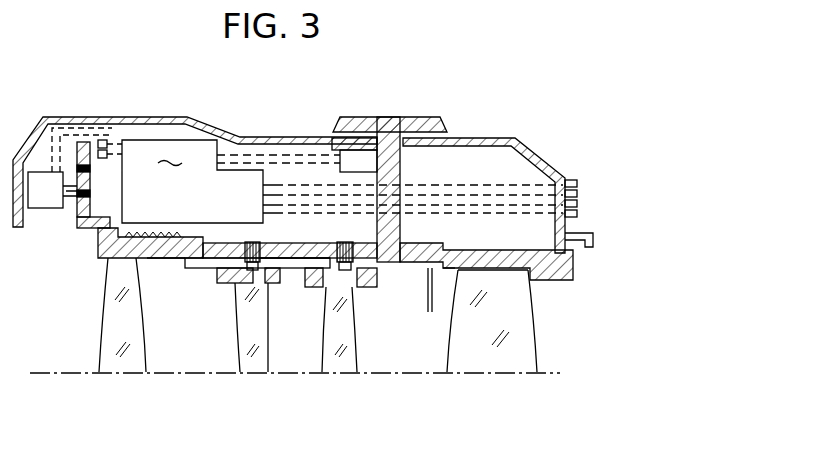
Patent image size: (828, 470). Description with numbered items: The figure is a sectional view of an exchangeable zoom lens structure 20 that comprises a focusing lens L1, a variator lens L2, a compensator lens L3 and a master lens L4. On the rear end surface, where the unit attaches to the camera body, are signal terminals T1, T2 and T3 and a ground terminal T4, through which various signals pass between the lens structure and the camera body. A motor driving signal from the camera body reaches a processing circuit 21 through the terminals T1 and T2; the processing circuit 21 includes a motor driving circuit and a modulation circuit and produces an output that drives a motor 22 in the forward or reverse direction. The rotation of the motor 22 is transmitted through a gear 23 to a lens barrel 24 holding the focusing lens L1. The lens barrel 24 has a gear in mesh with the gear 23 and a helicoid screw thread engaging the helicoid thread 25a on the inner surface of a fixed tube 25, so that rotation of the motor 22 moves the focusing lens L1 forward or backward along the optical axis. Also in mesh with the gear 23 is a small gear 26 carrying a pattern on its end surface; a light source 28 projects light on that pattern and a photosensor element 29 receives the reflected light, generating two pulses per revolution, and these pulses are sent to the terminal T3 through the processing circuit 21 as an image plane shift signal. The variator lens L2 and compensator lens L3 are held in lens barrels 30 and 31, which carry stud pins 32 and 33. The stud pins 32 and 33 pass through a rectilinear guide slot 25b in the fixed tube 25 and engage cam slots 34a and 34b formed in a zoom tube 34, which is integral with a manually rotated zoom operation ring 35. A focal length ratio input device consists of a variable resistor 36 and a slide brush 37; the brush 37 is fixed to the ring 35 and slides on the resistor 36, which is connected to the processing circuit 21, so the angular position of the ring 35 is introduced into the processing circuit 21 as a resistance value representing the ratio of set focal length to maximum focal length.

The zoom lens structure 20 is at (244, 130).
The processing circuit 21 is at (192, 181).
The motor 22 is at (40, 209).
The gear 23 is at (72, 198).
The lens barrel 24 is at (106, 248).
The fixed tube 25 is at (193, 268).
The helicoid thread 25a is at (152, 259).
The rectilinear guide slot 25b is at (296, 268).
The small gear 26 is at (83, 141).
The light source 28 is at (102, 139).
The photosensor element 29 is at (107, 154).
The lens barrel 30 is at (276, 271).
The lens barrel 31 is at (390, 262).
The stud pin 32 is at (225, 283).
The stud pin 33 is at (360, 288).
The zoom tube 34 is at (400, 258).
The cam slot 34a is at (350, 241).
The cam slot 34b is at (395, 245).
The zoom operation ring 35 is at (420, 124).
The variable resistor 36 is at (312, 136).
The slide brush 37 is at (360, 160).
The signal terminal T1 is at (578, 184).
The signal terminal T2 is at (578, 193).
The signal terminal T3 is at (578, 204).
The ground terminal T4 is at (578, 214).
The focusing lens L1 is at (120, 360).
The variator lens L2 is at (252, 362).
The compensator lens L3 is at (342, 364).
The master lens L4 is at (488, 370).